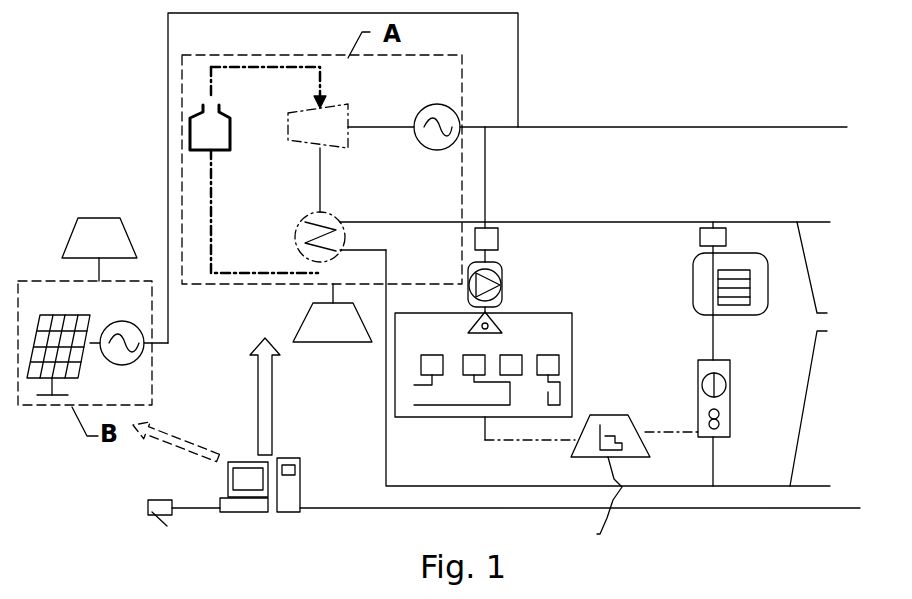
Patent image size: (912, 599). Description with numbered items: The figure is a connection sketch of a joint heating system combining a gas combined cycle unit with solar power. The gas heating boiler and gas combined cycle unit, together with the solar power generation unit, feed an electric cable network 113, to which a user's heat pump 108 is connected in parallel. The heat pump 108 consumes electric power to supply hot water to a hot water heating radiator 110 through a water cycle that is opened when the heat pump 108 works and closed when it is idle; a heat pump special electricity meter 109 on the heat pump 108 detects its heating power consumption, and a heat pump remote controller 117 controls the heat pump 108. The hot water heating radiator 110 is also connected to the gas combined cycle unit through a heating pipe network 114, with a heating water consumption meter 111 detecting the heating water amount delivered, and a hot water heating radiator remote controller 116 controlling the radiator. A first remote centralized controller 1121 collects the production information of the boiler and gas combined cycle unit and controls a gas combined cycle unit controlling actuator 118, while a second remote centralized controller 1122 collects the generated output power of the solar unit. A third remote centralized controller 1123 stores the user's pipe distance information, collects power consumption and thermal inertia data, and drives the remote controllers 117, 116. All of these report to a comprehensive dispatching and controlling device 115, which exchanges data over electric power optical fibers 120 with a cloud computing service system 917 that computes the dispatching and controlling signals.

The gas combined cycle unit controlling actuator 118 is at (211, 170).
The second remote centralized controller 1122 is at (99, 218).
The electric cable network 113 is at (516, 337).
The heat pump remote controller 117 is at (495, 238).
The heat pump 108 is at (500, 283).
The heat pump special electricity meter 109 is at (443, 417).
The third remote centralized controller 1123 is at (608, 420).
The hot water heating radiator remote controller 116 is at (674, 240).
The hot water heating radiator 110 is at (700, 284).
The heating water consumption meter 111 is at (742, 396).
The heating pipe network 114 is at (825, 354).
The first remote centralized controller 1121 is at (303, 343).
The comprehensive dispatching and controlling device 115 is at (239, 458).
The electric power optical fibers 120 is at (200, 508).
The cloud computing service system 917 is at (178, 530).